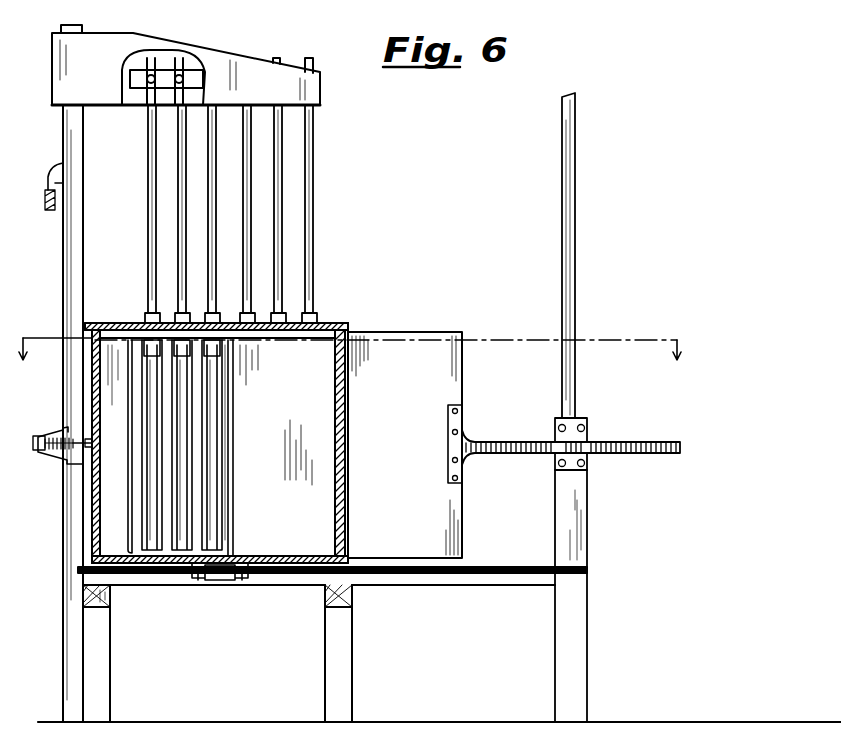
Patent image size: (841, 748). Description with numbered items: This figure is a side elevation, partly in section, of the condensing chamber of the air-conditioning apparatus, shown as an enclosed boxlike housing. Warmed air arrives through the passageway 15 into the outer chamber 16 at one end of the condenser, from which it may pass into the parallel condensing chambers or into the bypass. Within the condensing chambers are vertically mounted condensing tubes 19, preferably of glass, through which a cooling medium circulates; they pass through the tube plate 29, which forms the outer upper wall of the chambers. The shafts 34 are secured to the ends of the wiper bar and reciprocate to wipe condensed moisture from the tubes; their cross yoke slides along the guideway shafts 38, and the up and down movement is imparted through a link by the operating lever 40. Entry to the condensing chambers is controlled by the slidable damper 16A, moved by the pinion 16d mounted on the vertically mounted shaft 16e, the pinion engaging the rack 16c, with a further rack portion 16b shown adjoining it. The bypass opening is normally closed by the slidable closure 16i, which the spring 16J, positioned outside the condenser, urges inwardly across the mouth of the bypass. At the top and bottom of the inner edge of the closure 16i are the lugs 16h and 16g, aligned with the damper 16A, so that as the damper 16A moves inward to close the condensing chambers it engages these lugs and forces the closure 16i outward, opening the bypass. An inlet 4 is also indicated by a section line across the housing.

The inlet 4 is at (350, 334).
The passageway 15 is at (222, 580).
The outer chamber 16 is at (413, 289).
The damper 16A is at (456, 316).
The rack bar left portion 16b is at (488, 438).
The rack 16c is at (648, 442).
The pinion 16d is at (587, 433).
The vertically mounted shaft 16e is at (572, 265).
The lug 16g is at (153, 553).
The lug 16h is at (138, 340).
The closure 16i is at (112, 453).
The spring 16J is at (52, 430).
The tube 19 is at (212, 508).
The tube plate 29 is at (278, 372).
The shaft 34 is at (312, 227).
The guideway shaft 38 is at (77, 222).
The operating lever 40 is at (45, 198).